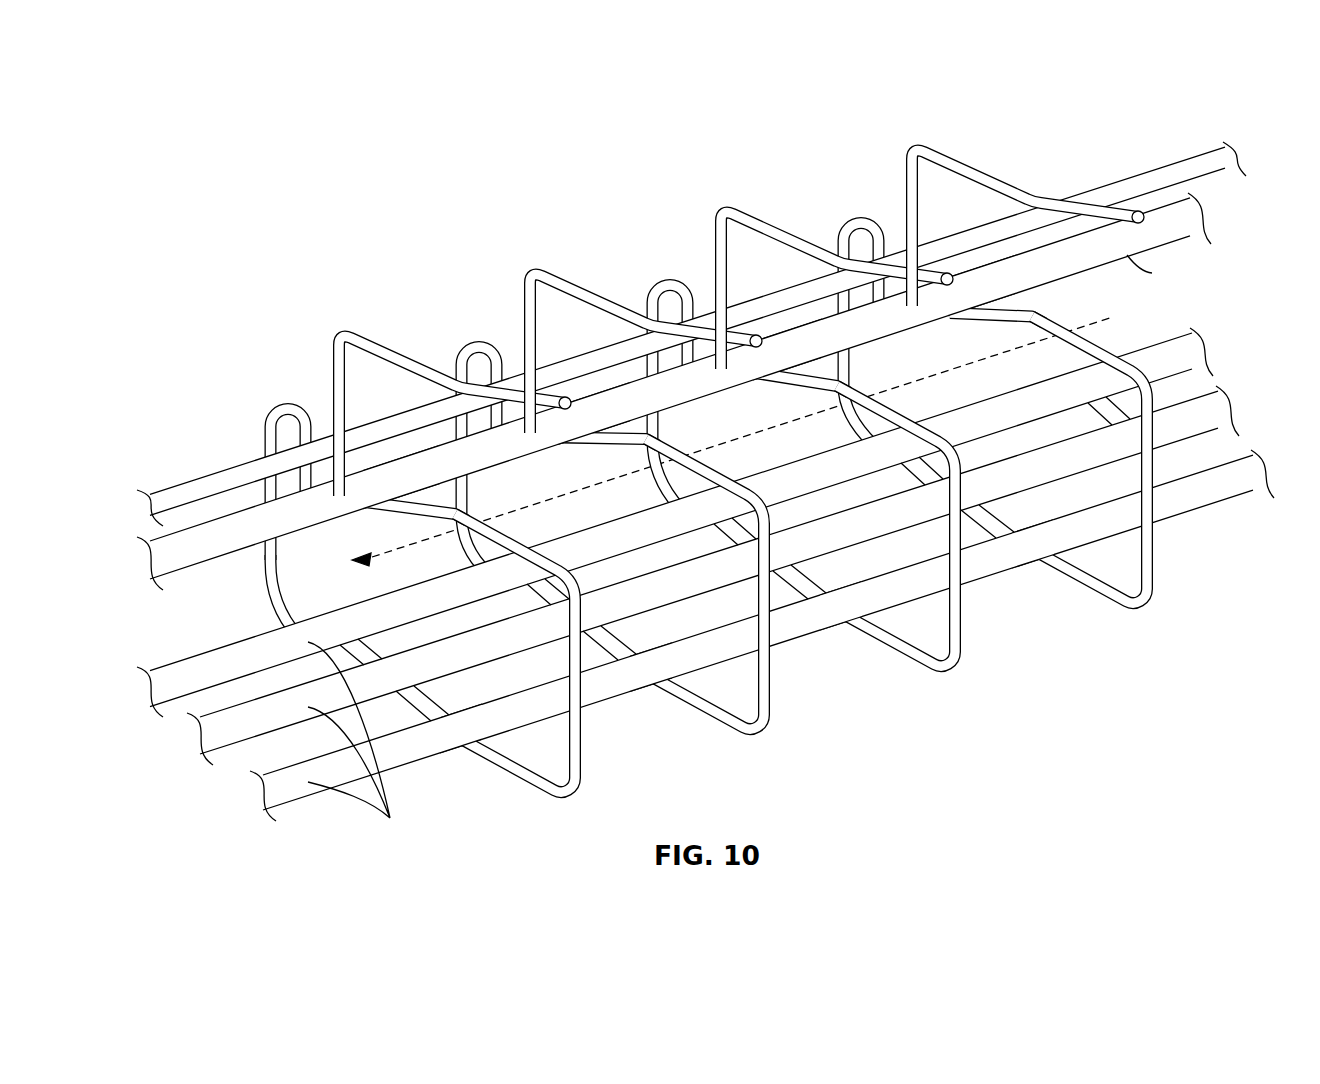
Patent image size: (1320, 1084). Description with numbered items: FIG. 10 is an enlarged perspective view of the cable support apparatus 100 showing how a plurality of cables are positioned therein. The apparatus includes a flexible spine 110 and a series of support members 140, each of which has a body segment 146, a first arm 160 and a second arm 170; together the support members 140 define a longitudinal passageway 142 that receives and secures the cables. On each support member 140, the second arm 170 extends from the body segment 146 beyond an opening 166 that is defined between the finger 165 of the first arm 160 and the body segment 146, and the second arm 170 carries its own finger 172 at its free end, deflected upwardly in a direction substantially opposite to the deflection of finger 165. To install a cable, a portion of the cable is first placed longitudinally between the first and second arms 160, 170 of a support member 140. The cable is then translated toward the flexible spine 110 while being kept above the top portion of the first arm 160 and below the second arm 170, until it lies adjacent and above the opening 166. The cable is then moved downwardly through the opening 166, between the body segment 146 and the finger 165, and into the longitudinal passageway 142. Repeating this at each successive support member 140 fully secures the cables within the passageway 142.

The shelf assembly 100 is at (503, 190).
The flexible spine 110 is at (208, 485).
The support member 140 is at (317, 290).
The longitudinal passageway 142 is at (275, 594).
The body segment 146 is at (286, 405).
The first arm 160 is at (507, 760).
The finger 165 is at (613, 432).
The opening 166 is at (322, 468).
The second arm 170 is at (370, 340).
The finger 172 is at (733, 323).